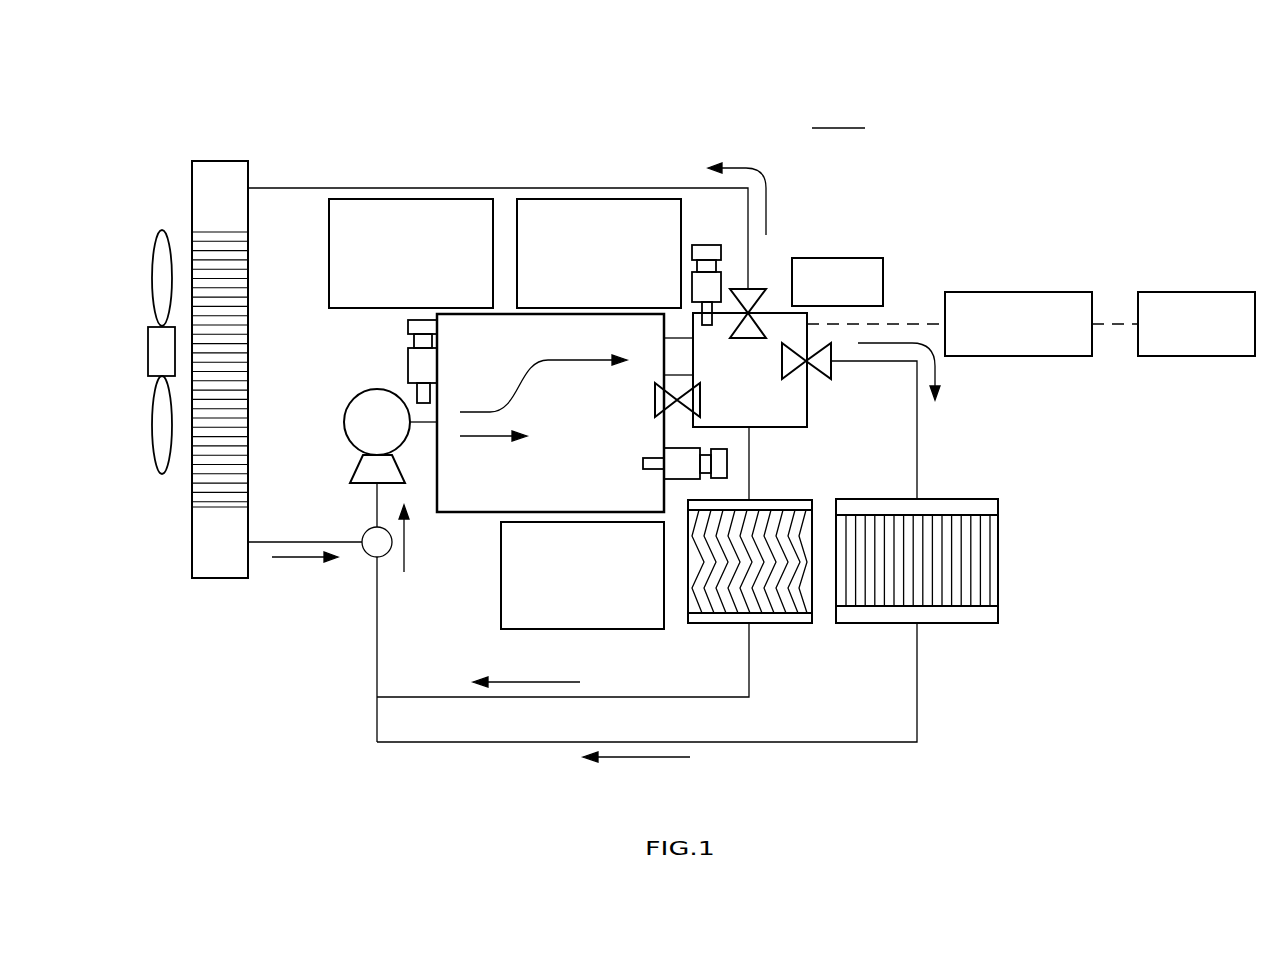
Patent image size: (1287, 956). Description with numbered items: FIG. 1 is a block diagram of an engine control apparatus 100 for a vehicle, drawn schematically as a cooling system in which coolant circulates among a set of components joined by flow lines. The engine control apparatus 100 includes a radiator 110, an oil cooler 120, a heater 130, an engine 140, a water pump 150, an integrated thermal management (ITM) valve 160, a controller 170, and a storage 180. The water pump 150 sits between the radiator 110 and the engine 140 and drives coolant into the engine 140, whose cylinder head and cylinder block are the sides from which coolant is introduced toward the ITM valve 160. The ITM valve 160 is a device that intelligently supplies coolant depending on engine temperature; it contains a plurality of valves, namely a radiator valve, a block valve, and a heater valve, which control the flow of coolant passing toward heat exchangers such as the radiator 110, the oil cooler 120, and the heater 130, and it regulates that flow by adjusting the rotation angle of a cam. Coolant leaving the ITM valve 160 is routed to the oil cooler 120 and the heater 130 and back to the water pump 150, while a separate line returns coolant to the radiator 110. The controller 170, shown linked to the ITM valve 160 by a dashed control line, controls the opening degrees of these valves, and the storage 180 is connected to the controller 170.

The engine control apparatus 100 is at (1135, 76).
The radiator 110 is at (222, 161).
The oil cooler 120 is at (811, 623).
The heater 130 is at (998, 565).
The engine 140 is at (467, 513).
The water pump 150 is at (344, 422).
The ITM valve 160 is at (807, 412).
The controller 170 is at (1018, 292).
The storage 180 is at (1197, 292).